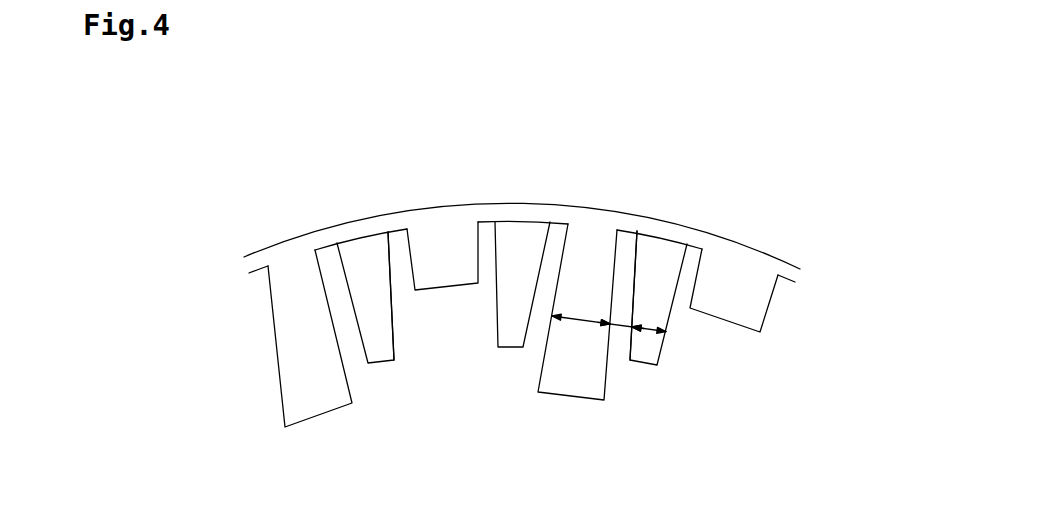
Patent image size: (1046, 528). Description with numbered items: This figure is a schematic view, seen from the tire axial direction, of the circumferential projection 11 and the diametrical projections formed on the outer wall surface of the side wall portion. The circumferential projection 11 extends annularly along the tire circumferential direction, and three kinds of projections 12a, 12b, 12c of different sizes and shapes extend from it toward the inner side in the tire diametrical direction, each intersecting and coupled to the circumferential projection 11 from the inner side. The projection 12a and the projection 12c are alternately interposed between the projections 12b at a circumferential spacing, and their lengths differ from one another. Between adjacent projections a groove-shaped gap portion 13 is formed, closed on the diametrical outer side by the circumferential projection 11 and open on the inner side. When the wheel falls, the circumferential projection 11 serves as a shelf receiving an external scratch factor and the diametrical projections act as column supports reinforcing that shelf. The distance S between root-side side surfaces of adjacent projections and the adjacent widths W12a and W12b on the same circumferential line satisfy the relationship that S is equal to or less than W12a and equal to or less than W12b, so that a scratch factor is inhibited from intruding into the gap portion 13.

The circumferential projection 11 is at (487, 205).
The projection 12a is at (308, 418).
The projection 12b is at (383, 363).
The projection 12c is at (445, 285).
The gap portion 13 is at (397, 269).
The width of projection 12a W12a is at (575, 319).
The width of projection 12b W12b is at (648, 329).
The distance S is at (617, 328).